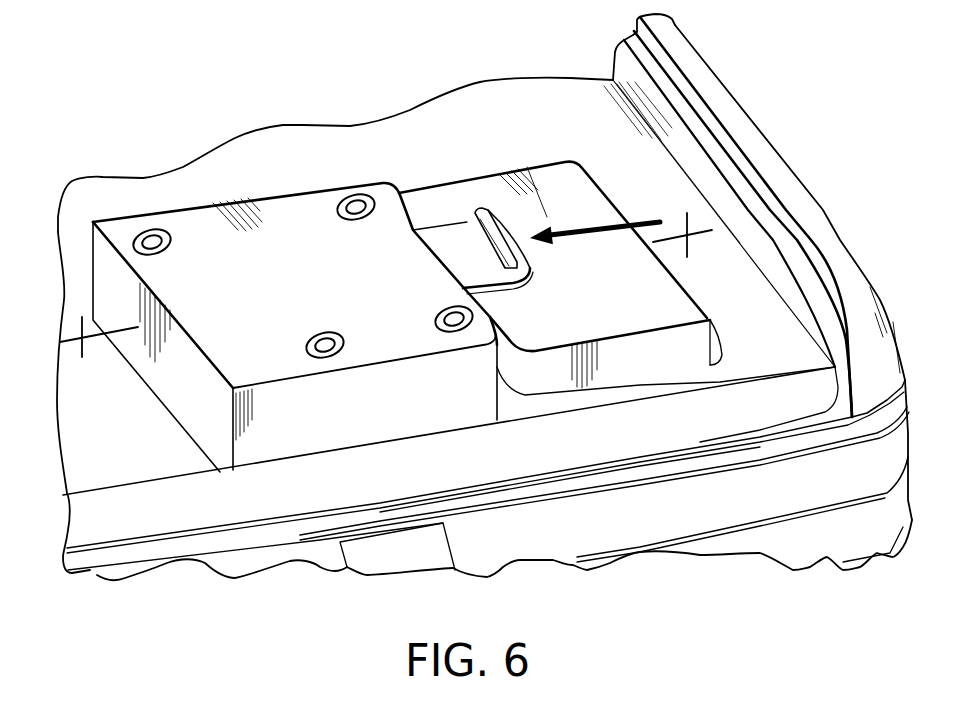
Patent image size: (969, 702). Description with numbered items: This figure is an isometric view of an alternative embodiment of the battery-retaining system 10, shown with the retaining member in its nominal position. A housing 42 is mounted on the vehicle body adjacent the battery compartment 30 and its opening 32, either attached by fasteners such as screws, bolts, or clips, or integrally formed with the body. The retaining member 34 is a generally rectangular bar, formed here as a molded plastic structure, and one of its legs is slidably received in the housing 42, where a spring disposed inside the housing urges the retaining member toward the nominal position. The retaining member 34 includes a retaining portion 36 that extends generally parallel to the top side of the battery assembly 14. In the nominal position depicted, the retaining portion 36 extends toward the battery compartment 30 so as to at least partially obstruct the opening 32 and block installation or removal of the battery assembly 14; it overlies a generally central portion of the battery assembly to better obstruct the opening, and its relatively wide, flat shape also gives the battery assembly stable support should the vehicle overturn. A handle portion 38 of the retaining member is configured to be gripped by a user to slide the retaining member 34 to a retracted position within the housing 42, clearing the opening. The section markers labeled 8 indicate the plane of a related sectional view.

The battery-retaining system 10 is at (410, 70).
The housing 42 is at (290, 206).
The battery assembly 14 is at (537, 155).
The handle portion 38 is at (480, 230).
The retaining member 34 is at (550, 283).
The retaining portion 36 is at (500, 292).
The battery compartment 30 is at (714, 338).
The opening 32 is at (660, 368).
The section line 8- 8 is at (100, 362).